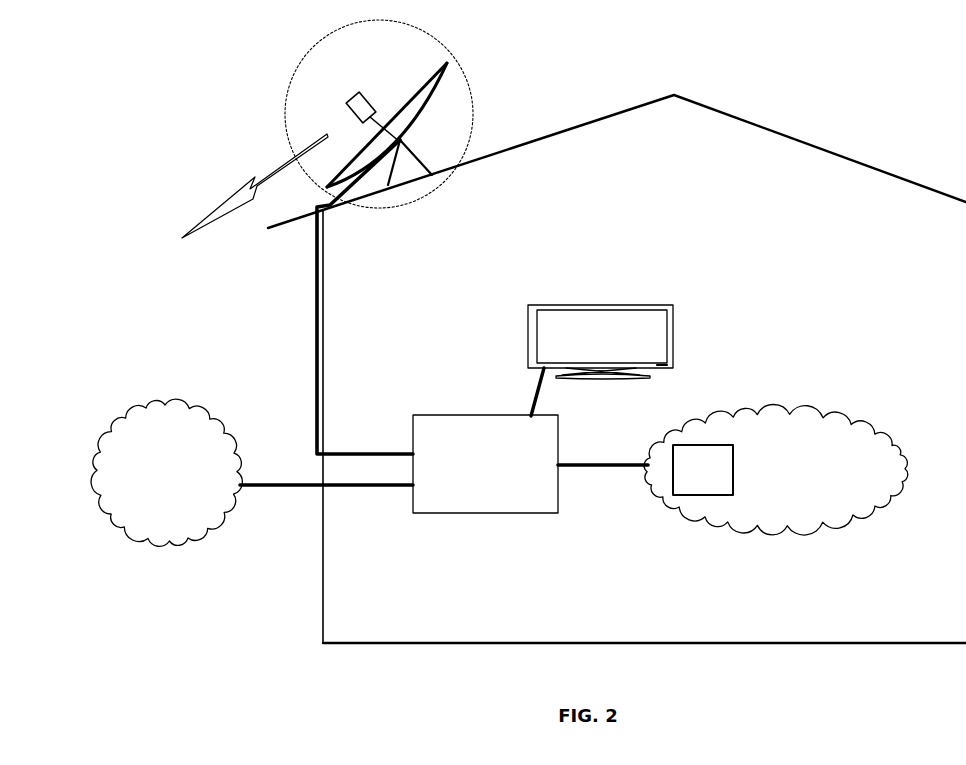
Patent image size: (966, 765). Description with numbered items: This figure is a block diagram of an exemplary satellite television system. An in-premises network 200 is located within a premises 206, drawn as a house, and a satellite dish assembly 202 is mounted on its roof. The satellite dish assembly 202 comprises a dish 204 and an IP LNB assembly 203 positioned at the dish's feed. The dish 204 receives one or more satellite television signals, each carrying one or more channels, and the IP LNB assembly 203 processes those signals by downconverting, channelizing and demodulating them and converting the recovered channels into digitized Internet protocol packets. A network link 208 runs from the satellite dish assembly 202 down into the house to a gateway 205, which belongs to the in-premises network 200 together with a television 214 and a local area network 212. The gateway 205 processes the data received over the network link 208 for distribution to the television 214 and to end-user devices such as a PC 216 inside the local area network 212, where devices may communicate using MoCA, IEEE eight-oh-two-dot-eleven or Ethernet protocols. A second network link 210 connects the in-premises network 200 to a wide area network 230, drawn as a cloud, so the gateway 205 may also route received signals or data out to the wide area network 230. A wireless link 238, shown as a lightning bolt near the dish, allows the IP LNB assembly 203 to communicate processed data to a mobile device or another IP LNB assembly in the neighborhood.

The in-premises network 200 is at (884, 251).
The satellite dish assembly 202 is at (472, 113).
The IP LNB assembly 203 is at (348, 97).
The dish 204 is at (423, 79).
The gateway 205 is at (485, 464).
The premises 206 is at (863, 167).
The network link 208 is at (315, 297).
The network link 210 is at (304, 483).
The local area network (LAN) 212 is at (733, 470).
The television 214 is at (546, 303).
The PC 216 is at (703, 470).
The wide area network (WAN) 230 is at (166, 472).
The wireless link 238 is at (222, 206).